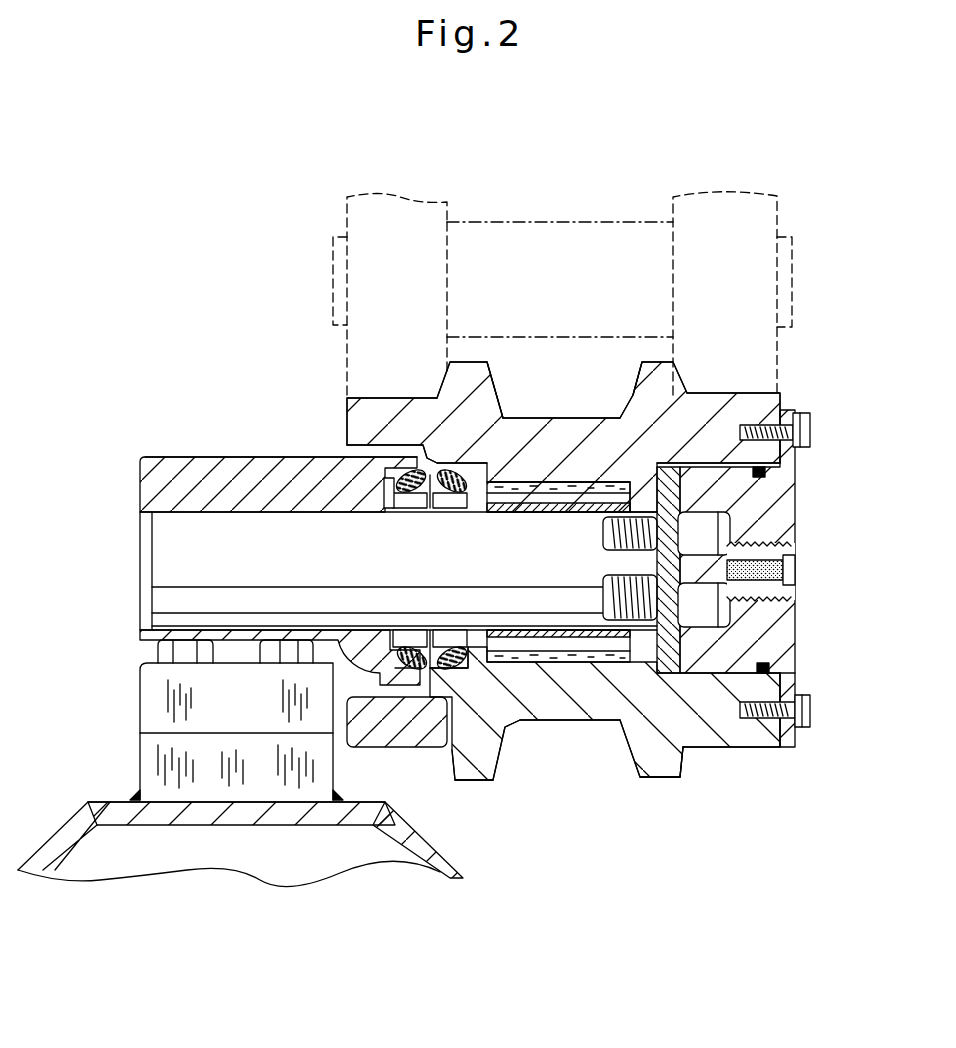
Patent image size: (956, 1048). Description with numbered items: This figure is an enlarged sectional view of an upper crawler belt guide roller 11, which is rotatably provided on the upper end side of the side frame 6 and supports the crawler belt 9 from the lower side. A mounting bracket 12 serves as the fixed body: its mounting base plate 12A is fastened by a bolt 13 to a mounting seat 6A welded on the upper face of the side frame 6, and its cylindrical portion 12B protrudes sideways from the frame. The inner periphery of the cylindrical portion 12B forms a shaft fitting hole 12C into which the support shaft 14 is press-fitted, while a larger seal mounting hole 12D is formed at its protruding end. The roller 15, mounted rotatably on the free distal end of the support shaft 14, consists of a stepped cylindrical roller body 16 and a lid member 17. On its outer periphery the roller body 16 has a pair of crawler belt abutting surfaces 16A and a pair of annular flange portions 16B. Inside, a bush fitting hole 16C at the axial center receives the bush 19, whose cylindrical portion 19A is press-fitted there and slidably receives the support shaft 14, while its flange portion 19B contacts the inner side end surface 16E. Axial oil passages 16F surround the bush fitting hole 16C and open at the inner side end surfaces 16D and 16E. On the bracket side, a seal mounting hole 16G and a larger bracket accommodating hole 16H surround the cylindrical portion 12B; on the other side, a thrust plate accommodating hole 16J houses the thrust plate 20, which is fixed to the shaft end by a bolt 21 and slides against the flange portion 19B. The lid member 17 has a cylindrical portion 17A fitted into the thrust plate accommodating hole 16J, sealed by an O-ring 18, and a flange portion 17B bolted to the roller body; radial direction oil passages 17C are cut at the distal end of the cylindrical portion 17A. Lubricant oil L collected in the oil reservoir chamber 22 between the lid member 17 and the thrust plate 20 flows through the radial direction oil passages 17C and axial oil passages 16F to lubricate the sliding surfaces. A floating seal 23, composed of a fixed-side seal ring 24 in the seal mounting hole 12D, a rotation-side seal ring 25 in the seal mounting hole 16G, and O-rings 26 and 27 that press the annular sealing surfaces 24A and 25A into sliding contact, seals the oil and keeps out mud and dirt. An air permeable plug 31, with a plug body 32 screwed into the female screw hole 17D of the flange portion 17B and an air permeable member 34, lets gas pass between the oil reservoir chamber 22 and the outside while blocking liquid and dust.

The side frame 6 is at (277, 817).
The mounting seat 6A is at (200, 768).
The crawler belt 9 is at (541, 240).
The upper crawler belt guide roller 11 is at (473, 796).
The mounting bracket 12 is at (217, 453).
The mounting base plate 12A is at (227, 705).
The cylindrical portion 12B is at (178, 470).
The shaft fitting hole 12C is at (240, 513).
The seal mounting hole 12D is at (388, 670).
The bolt 13 is at (183, 654).
The support shaft 14 is at (223, 568).
The roller 15 is at (650, 782).
The roller body 16 is at (440, 372).
The crawler belt abutting surfaces 16A is at (363, 395).
The flange portions 16B is at (468, 378).
The bush fitting hole 16C is at (563, 480).
The inner side end surface 16D is at (478, 447).
The inner side end surface 16E is at (633, 408).
The axial oil passages 16F is at (520, 457).
The seal mounting hole 16G is at (488, 768).
The bracket accommodating hole 16H is at (360, 445).
The thrust plate accommodating hole 16J is at (703, 473).
The lid member 17 is at (802, 676).
The cylindrical portion 17A is at (707, 665).
The flange portion 17B is at (792, 728).
The radial direction oil passages 17C is at (693, 753).
The female screw hole 17D is at (760, 553).
The O-ring 18 is at (772, 470).
The bush 19 is at (563, 727).
The cylindrical portion 19A is at (560, 648).
The flange portion 19B is at (626, 753).
The thrust plate 20 is at (680, 500).
The bolt 21 is at (705, 530).
The oil reservoir chamber 22 is at (720, 620).
The floating seal 23 is at (412, 686).
The fixed-side seal ring 24 is at (420, 647).
The sealing surface 24A is at (437, 653).
The rotation-side seal ring 25 is at (448, 490).
The sealing surface 25A is at (427, 490).
The O-ring 26 is at (392, 480).
The O-ring 27 is at (457, 668).
The air permeable plug 31 is at (802, 587).
The plug body 32 is at (763, 590).
The air permeable member 34 is at (785, 570).
The lubricant oil L is at (725, 662).